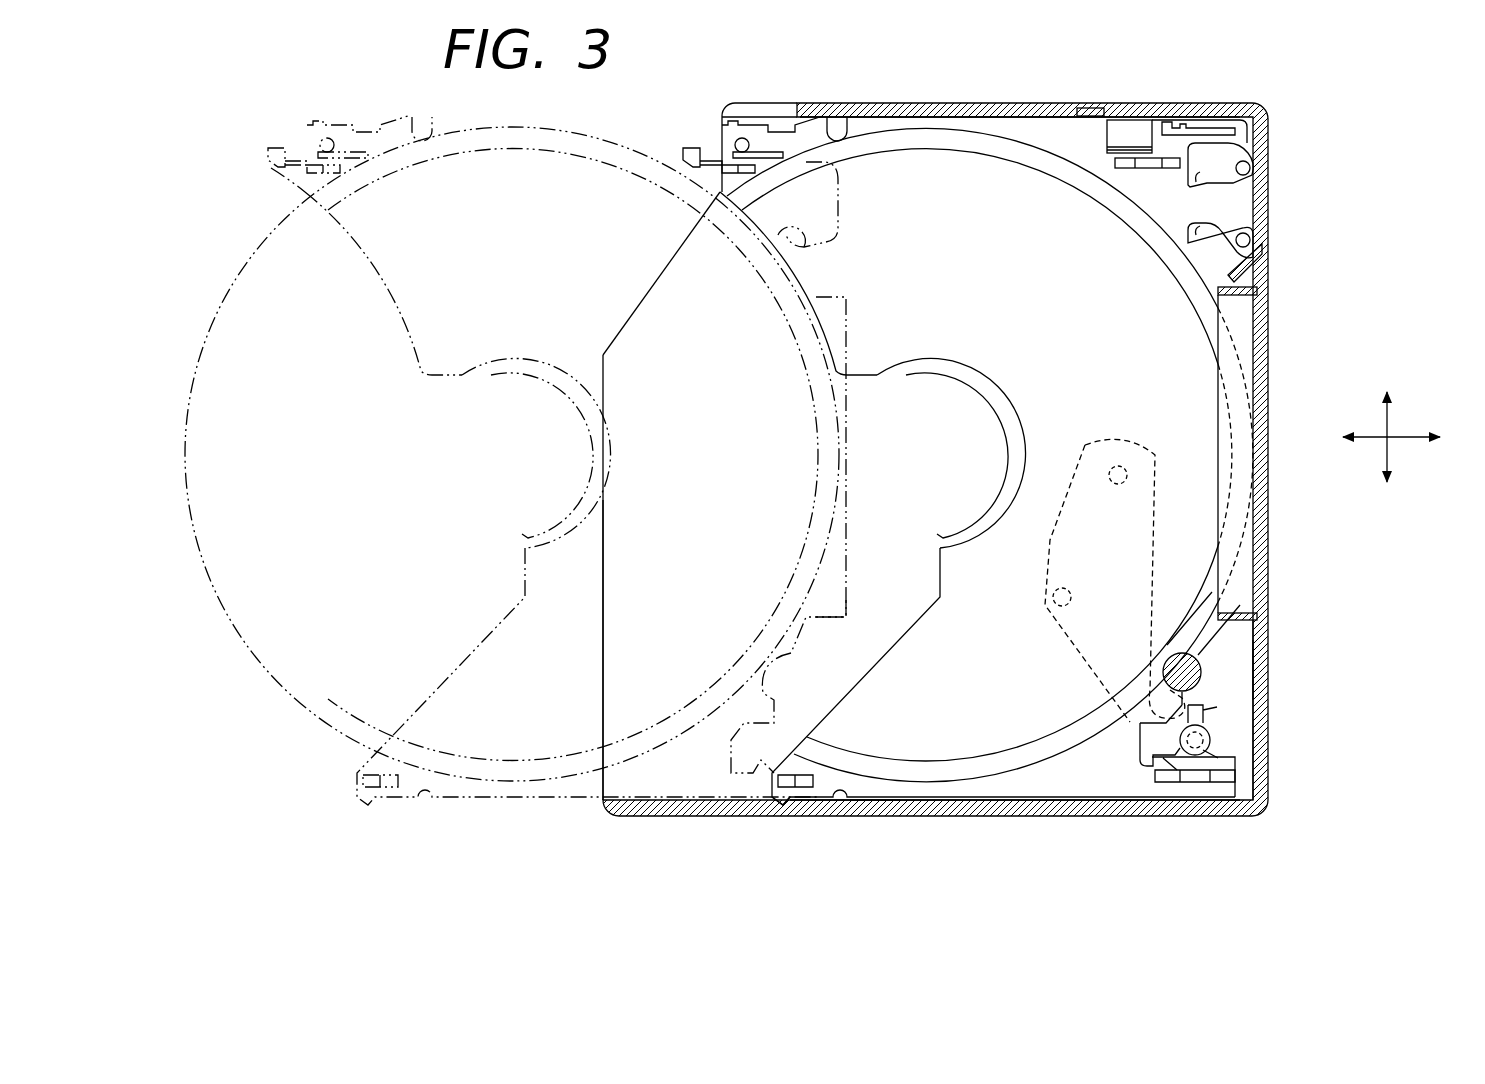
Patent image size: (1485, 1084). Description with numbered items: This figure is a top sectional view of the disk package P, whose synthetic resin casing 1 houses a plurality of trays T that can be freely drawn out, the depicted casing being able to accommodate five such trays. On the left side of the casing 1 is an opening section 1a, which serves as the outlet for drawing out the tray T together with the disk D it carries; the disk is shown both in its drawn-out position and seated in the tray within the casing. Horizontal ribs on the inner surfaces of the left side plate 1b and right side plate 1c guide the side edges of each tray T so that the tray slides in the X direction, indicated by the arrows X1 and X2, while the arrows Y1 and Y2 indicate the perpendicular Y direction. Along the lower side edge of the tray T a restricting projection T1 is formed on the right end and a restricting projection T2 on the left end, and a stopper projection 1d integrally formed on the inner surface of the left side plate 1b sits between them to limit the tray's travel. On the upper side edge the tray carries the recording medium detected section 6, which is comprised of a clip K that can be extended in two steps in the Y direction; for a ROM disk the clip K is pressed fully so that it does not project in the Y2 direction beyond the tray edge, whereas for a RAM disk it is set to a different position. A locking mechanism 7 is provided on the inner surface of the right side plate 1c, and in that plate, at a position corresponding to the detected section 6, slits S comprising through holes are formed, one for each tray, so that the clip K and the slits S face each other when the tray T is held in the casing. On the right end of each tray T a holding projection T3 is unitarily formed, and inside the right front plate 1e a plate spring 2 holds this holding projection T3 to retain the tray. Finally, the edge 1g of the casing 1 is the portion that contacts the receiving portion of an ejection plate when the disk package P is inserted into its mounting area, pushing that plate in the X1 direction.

The casing 1 is at (734, 823).
The opening section 1a is at (595, 657).
The left side plate 1b is at (1035, 817).
The right side plate 1c is at (1018, 102).
The stopper projection 1d is at (818, 808).
The right front plate 1e is at (1264, 330).
The edge 1g is at (1266, 487).
The plate spring 2 is at (1262, 268).
The recording medium detected section 6 is at (1122, 160).
The locking mechanism 7 is at (1088, 106).
The disk D is at (242, 643).
The clip K is at (1127, 118).
The slits S is at (1158, 108).
The tray T is at (903, 665).
The restricting projection T1 is at (1225, 806).
The restricting projection T2 is at (783, 806).
The holding projection T3 is at (1238, 192).
The disk package P is at (1287, 652).
The X1 direction X1 is at (1345, 438).
The X2 direction X2 is at (1431, 438).
The Y1 direction Y1 is at (1386, 397).
The Y2 direction Y2 is at (1386, 479).